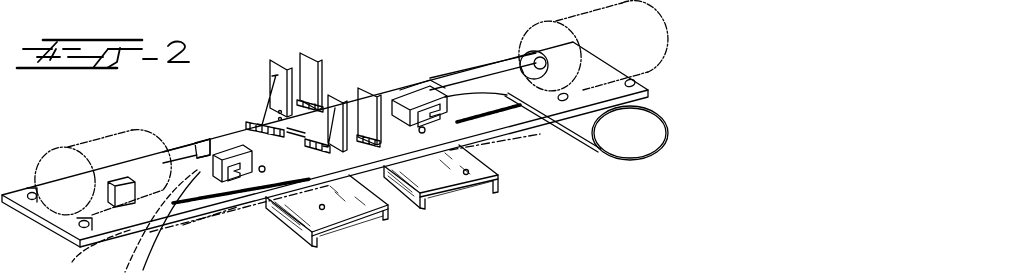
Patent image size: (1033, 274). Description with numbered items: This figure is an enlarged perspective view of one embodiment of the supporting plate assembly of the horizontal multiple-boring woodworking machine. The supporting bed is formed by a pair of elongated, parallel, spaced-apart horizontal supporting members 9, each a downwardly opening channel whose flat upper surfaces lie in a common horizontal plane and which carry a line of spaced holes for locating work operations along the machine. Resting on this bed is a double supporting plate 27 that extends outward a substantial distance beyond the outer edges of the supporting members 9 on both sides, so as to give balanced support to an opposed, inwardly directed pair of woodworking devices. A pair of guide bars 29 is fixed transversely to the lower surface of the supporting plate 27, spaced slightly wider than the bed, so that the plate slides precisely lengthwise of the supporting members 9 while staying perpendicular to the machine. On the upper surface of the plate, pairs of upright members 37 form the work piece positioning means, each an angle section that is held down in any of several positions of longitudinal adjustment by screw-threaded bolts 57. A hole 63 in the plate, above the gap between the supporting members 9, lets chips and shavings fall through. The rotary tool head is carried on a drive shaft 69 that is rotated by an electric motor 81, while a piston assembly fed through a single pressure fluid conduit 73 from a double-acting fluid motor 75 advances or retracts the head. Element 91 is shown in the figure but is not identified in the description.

The supporting member 9 is at (460, 188).
The supporting plate 27 is at (188, 215).
The guide bar 29 is at (268, 203).
The upright member 37 is at (270, 70).
The screw-threaded bolt 57 is at (238, 144).
The hole 63 is at (310, 150).
The drive shaft 69 is at (470, 75).
The pressure fluid conduit 73 is at (617, 155).
The double-acting fluid motor 75 is at (500, 143).
The electric motor 81 is at (618, 44).
The support 91 is at (604, 272).